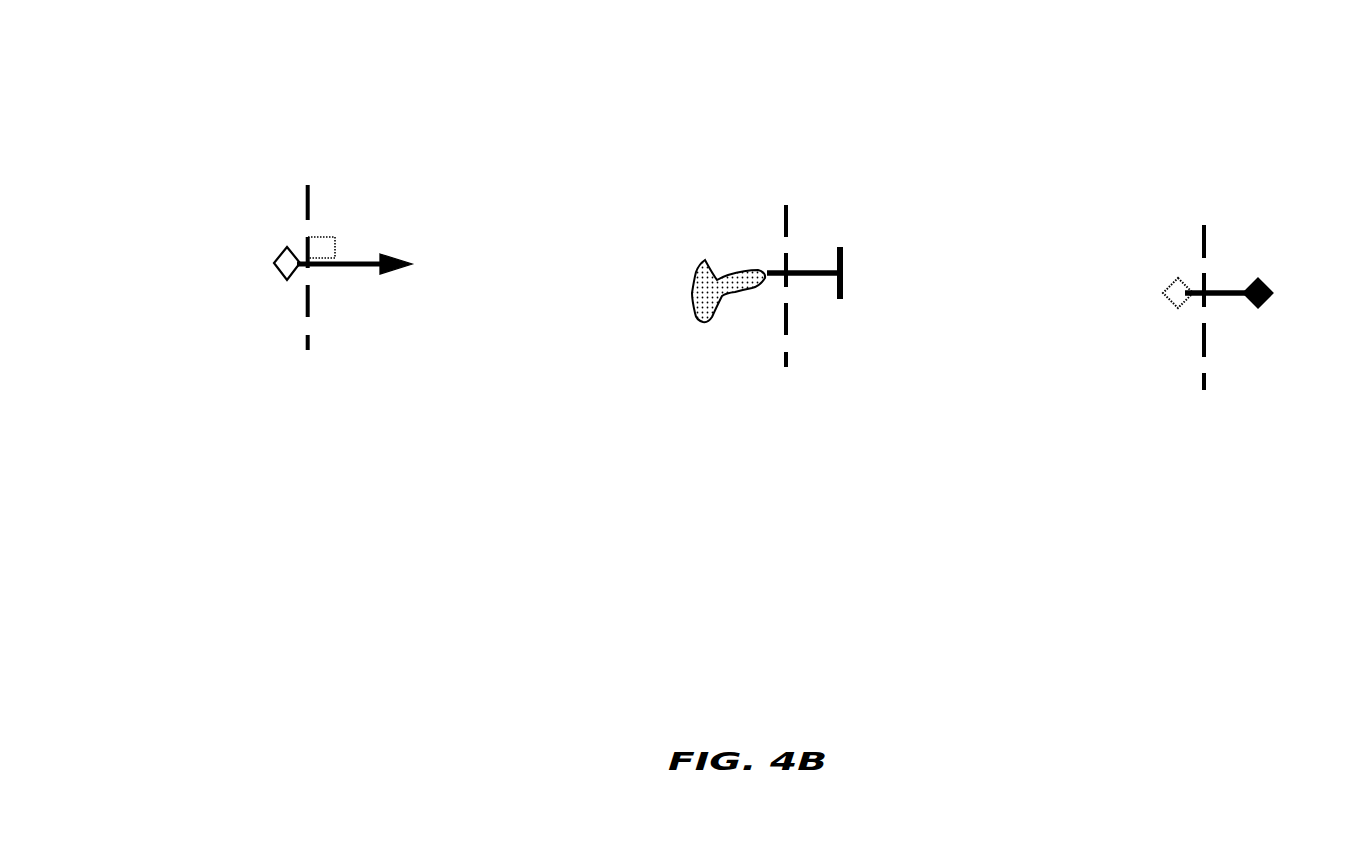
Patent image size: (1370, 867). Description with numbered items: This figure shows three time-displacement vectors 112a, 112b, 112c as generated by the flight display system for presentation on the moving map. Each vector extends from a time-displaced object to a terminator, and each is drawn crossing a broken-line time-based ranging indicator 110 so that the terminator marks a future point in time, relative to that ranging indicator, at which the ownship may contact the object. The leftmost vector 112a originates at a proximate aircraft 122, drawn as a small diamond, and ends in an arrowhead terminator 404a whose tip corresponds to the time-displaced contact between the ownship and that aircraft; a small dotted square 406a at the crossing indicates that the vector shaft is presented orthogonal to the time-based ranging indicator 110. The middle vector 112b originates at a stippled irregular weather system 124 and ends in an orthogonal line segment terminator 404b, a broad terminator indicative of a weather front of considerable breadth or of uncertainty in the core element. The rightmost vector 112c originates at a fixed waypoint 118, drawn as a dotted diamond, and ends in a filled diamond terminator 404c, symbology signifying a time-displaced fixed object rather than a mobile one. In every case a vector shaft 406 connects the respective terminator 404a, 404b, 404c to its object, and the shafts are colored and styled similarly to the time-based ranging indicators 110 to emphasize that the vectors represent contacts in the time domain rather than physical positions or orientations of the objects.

The time-displacement vector 112a is at (258, 124).
The time-displacement vector 112b is at (660, 123).
The time-displacement vector 112c is at (1061, 133).
The time-based ranging indicator 110 is at (307, 298).
The vector shaft 406 is at (350, 267).
The orthogonal vector shaft 406a is at (323, 245).
The terminator 404a is at (396, 261).
The terminator 404b is at (843, 258).
The terminator 404c is at (1262, 280).
The proximate aircraft 122 is at (282, 259).
The weather system 124 is at (715, 287).
The waypoint 118 is at (1173, 281).